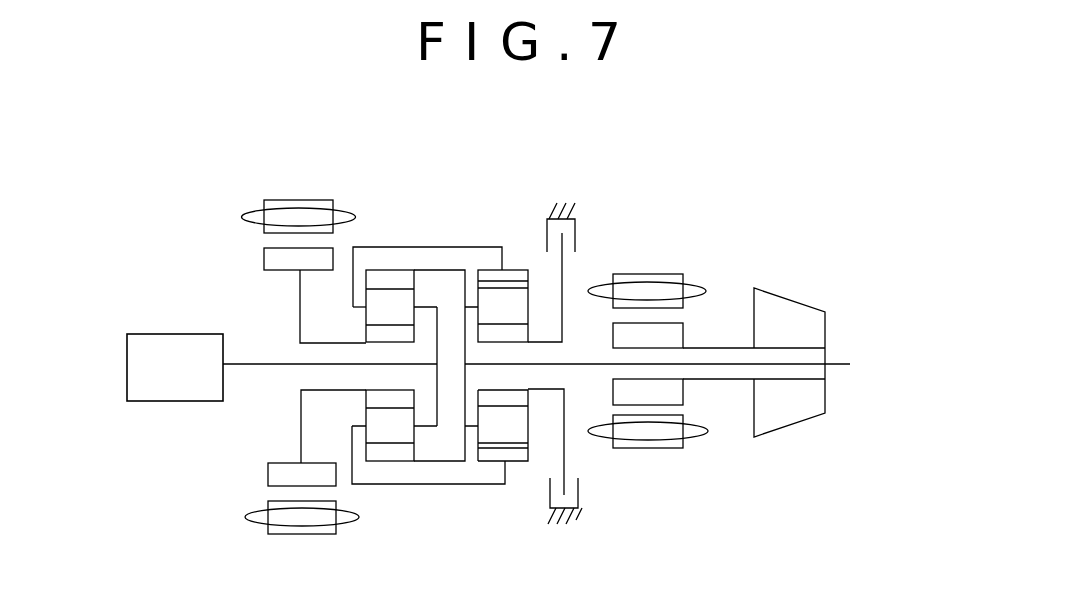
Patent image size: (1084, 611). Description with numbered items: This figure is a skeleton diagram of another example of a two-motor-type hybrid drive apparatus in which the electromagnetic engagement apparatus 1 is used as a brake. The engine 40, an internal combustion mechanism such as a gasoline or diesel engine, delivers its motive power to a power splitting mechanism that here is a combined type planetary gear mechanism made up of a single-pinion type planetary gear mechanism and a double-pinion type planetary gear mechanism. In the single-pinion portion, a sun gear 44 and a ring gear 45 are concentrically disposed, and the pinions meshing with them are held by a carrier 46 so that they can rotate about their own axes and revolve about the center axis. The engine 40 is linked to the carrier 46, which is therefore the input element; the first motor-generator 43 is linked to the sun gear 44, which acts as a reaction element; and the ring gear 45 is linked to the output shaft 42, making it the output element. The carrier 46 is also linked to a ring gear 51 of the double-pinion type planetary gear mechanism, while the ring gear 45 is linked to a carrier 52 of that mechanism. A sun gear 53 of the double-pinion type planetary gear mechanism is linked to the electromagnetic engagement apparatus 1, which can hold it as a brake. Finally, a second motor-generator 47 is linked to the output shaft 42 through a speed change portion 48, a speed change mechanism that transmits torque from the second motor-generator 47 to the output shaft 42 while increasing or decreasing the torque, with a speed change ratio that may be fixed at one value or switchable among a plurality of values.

The electromagnetic engagement apparatus 1 is at (558, 198).
The engine 40 is at (157, 334).
The output shaft 42 is at (843, 365).
The first motor-generator 43 is at (308, 198).
The sun gear 44 is at (367, 397).
The ring gear 45 is at (390, 458).
The carrier 46 is at (427, 305).
The second motor-generator 47 is at (652, 267).
The speed change portion 48 is at (790, 298).
The ring gear 51 is at (517, 457).
The carrier 52 is at (468, 302).
The sun gear 53 is at (495, 400).